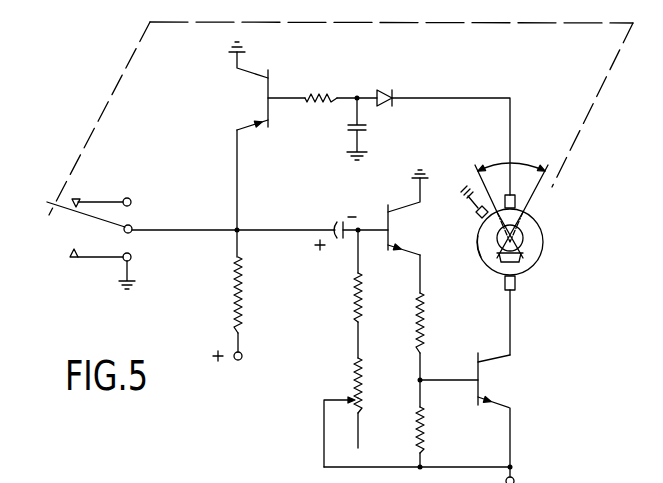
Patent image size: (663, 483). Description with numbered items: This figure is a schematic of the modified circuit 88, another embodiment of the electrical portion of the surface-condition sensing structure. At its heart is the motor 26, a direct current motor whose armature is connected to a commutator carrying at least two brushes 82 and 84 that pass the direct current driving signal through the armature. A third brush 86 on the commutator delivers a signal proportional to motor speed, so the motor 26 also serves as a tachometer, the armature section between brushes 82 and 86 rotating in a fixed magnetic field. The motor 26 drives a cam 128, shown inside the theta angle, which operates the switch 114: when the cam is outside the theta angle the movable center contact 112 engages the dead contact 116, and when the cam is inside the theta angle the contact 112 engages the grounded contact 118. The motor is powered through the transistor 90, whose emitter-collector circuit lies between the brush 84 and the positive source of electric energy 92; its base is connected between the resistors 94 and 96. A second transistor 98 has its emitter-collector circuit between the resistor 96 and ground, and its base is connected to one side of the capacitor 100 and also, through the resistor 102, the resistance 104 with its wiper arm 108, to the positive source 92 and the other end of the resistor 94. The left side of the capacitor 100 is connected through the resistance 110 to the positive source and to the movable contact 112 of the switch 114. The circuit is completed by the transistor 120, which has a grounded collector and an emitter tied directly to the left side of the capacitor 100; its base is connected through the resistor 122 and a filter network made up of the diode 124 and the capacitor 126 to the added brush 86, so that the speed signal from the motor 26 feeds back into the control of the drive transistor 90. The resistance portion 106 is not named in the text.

The motor 26 is at (541, 254).
The brush 82 is at (478, 216).
The brush 84 is at (517, 283).
The third brush 86 is at (517, 203).
The modified circuit 88 is at (582, 313).
The transistor 90 is at (483, 368).
The positive source of electric energy 92 is at (517, 480).
The resistor 94 is at (425, 434).
The resistor 96 is at (424, 323).
The second transistor 98 is at (392, 221).
The capacitor 100 is at (335, 222).
The resistor 102 is at (355, 288).
The resistance 104 is at (356, 372).
The potentiometer resistance portion 106 is at (363, 407).
The wiper arm 108 is at (334, 402).
The resistance 110 is at (233, 285).
The movable center contact 112 is at (63, 212).
The switch 114 is at (136, 226).
The dead contact 116 is at (98, 200).
The grounded contact 118 is at (103, 262).
The transistor 120 is at (262, 82).
The resistor 122 is at (336, 90).
The diode 124 is at (392, 97).
The capacitor 126 is at (350, 118).
The cam 128 is at (489, 259).